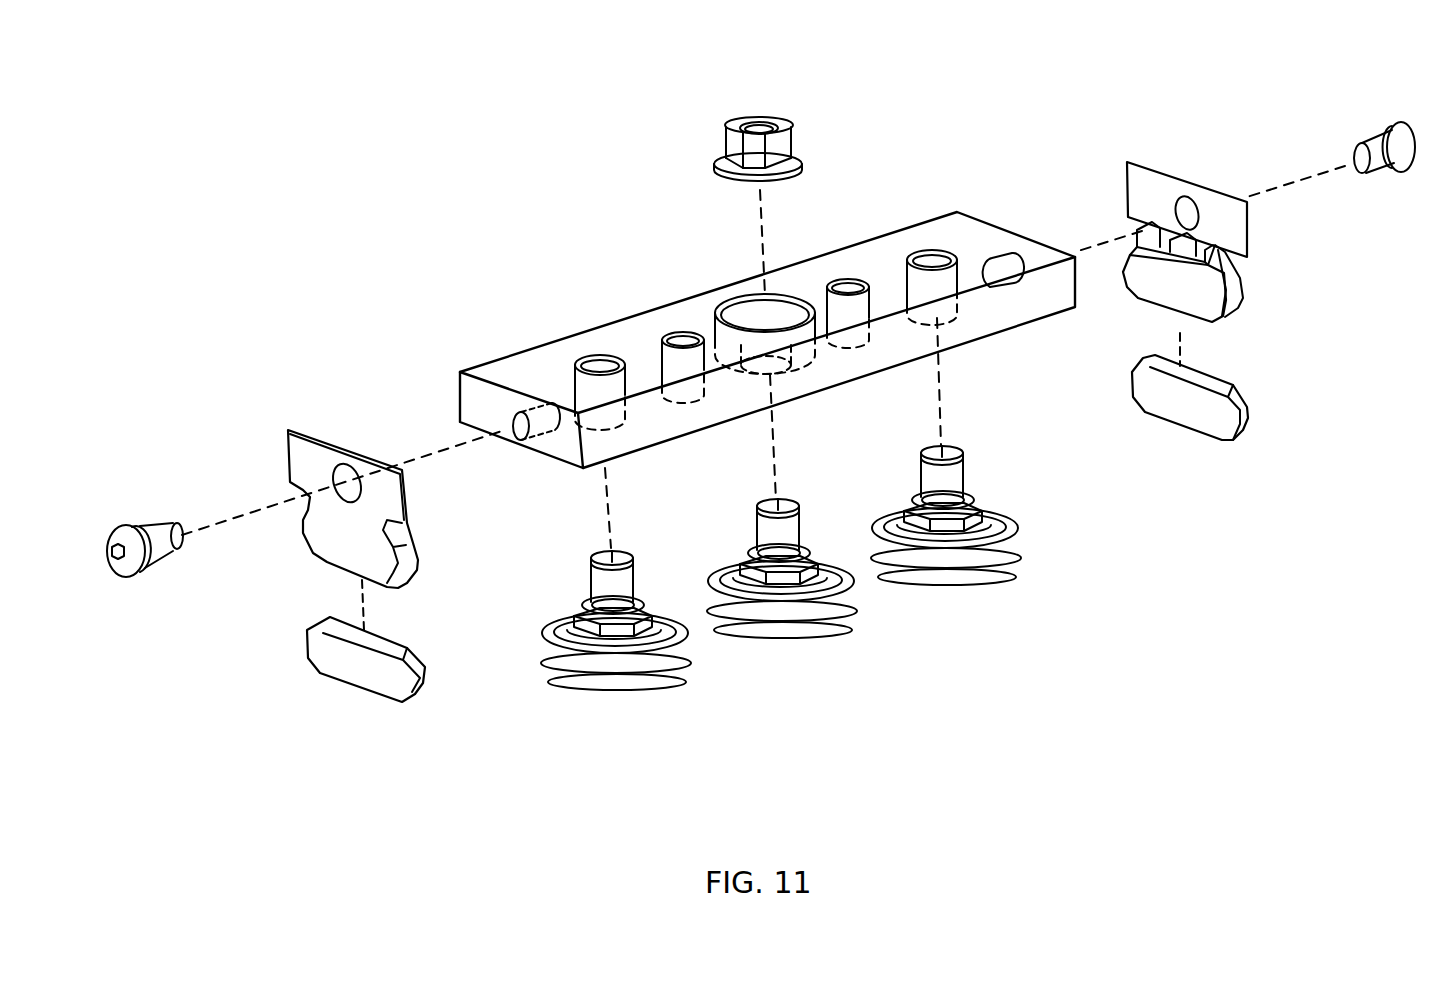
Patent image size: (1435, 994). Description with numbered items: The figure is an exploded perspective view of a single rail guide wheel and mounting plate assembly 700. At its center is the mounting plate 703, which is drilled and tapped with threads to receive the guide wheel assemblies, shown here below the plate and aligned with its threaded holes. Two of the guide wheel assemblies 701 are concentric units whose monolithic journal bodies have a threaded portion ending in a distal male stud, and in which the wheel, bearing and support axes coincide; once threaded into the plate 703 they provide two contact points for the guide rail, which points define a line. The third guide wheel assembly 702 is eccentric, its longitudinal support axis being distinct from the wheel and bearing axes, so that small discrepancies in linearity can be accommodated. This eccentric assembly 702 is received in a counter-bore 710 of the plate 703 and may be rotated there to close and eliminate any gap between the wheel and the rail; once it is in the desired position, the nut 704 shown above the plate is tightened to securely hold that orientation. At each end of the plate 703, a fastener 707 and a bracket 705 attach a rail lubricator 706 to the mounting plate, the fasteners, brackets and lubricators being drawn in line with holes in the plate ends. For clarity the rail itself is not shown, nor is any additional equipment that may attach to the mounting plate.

The guide wheel and mounting plate assembly 700 is at (1068, 33).
The guide wheel assembly 701 is at (630, 697).
The guide wheel assembly 702 is at (812, 647).
The mounting plate 703 is at (680, 300).
The nut 704 is at (730, 115).
The bracket 705 is at (417, 577).
The rail lubricator 706 is at (374, 697).
The fastener 707 is at (160, 560).
The counter-bore 710 is at (793, 372).